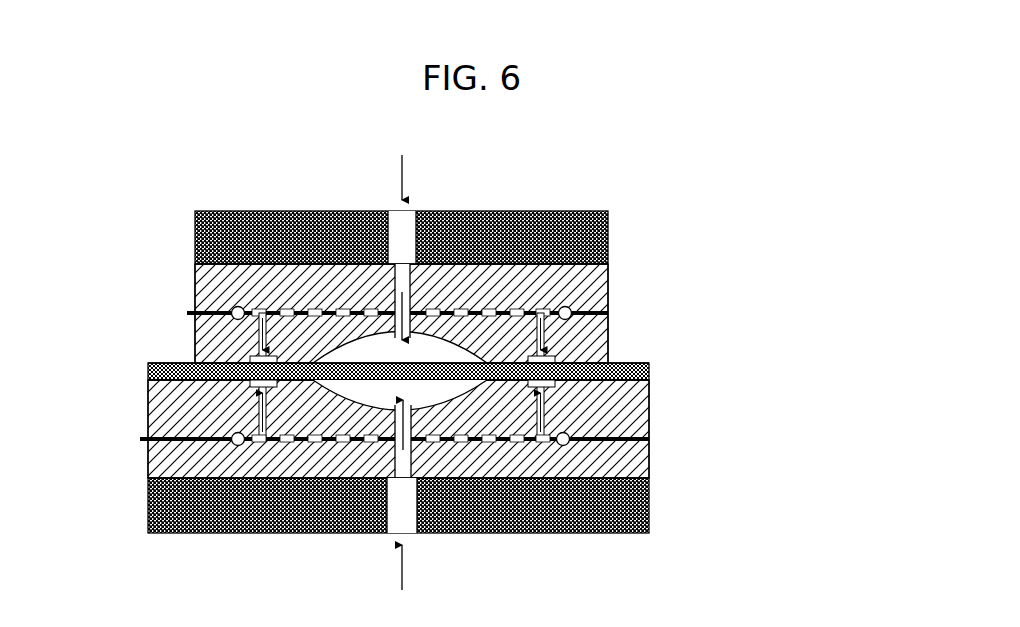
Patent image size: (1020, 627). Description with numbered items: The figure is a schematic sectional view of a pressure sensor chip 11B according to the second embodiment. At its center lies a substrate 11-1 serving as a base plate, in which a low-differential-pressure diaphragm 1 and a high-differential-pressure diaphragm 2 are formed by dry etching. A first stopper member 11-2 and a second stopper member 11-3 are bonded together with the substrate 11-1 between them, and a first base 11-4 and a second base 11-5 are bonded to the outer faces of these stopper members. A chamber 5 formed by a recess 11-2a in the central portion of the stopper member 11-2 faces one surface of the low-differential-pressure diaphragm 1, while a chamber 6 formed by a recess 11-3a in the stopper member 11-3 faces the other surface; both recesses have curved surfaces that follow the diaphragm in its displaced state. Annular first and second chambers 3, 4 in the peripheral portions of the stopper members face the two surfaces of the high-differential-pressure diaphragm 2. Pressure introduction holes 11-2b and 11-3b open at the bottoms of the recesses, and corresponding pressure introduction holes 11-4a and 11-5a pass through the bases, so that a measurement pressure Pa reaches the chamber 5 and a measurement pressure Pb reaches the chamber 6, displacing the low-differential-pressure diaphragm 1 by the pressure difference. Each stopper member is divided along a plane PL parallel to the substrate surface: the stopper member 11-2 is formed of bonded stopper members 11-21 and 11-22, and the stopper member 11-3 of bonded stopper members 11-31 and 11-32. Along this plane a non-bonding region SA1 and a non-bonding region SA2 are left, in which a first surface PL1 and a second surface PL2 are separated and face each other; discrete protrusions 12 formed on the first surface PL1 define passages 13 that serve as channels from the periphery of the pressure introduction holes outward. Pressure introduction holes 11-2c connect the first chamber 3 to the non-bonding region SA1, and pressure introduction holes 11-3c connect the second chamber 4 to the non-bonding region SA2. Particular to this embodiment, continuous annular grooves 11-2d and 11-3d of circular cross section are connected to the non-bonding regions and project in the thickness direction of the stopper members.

The low-differential-pressure diaphragm 1 is at (300, 505).
The high-differential-pressure diaphragm 2 is at (625, 371).
The first chamber 3 is at (608, 338).
The second chamber 4 is at (649, 395).
The chamber 5 is at (444, 300).
The chamber 6 is at (318, 470).
The protrusions 12 is at (335, 300).
The passages 13 is at (352, 305).
The substrate 11-1 is at (452, 371).
The first stopper member 11-2 is at (442, 236).
The stopper member 11-21 is at (608, 318).
The stopper member 11-22 is at (608, 280).
The recess 11-2a is at (448, 268).
The pressure introduction hole 11-2b is at (395, 272).
The pressure introduction holes 11-2c is at (608, 272).
The annular groove 11-2d is at (608, 297).
The second stopper member 11-3 is at (442, 501).
The stopper member 11-31 is at (649, 416).
The stopper member 11-32 is at (649, 460).
The recess 11-3a is at (437, 480).
The pressure introduction hole 11-3b is at (393, 462).
The pressure introduction holes 11-3c is at (649, 482).
The annular groove 11-3d is at (588, 508).
The first base 11-4 is at (501, 186).
The pressure introduction hole 11-4a is at (396, 224).
The second base 11-5 is at (476, 550).
The pressure introduction hole 11-5a is at (390, 510).
The pressure sensor chip 11B is at (472, 366).
The plane PL is at (195, 302).
The first surface PL1 is at (240, 230).
The second surface PL2 is at (232, 265).
The non-bonding region SA1 is at (492, 300).
The non-bonding region SA2 is at (528, 488).
The measurement pressure Pa is at (420, 177).
The measurement pressure Pb is at (420, 568).